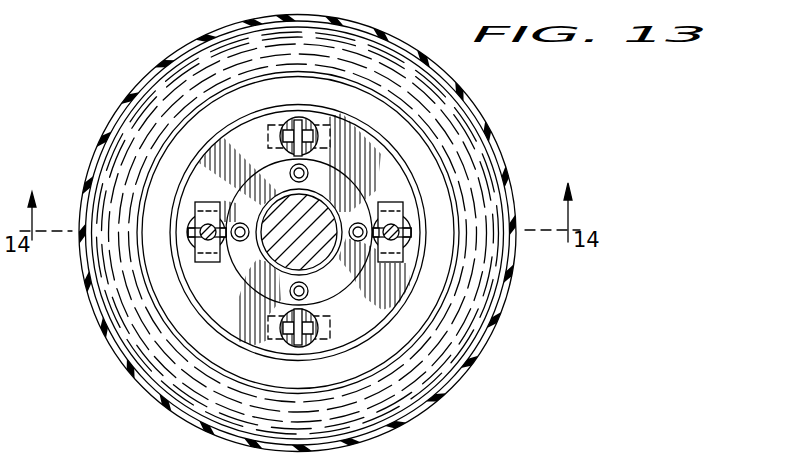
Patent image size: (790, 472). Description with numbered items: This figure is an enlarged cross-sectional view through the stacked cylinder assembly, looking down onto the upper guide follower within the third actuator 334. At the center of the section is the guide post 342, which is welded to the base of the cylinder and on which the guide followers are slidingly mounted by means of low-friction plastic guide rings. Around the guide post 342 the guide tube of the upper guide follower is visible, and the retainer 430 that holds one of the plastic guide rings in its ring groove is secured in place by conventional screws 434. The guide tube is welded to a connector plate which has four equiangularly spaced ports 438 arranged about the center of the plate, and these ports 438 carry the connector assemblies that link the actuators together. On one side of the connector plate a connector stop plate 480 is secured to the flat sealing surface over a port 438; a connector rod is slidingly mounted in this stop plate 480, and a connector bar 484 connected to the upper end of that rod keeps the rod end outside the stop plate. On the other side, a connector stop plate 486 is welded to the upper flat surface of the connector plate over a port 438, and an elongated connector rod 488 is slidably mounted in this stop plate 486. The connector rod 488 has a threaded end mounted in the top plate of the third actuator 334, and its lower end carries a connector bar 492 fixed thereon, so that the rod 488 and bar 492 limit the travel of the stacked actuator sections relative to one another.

The third actuator 334 is at (510, 285).
The guide post 342 is at (323, 267).
The retainer 430 is at (347, 198).
The screws 434 is at (293, 290).
The ports 438 is at (314, 119).
The connector stop plate 480 is at (318, 135).
The connector bar 484 is at (300, 122).
The connector stop plate 486 is at (397, 207).
The connector rod 488 is at (410, 243).
The connector bar 492 is at (407, 232).